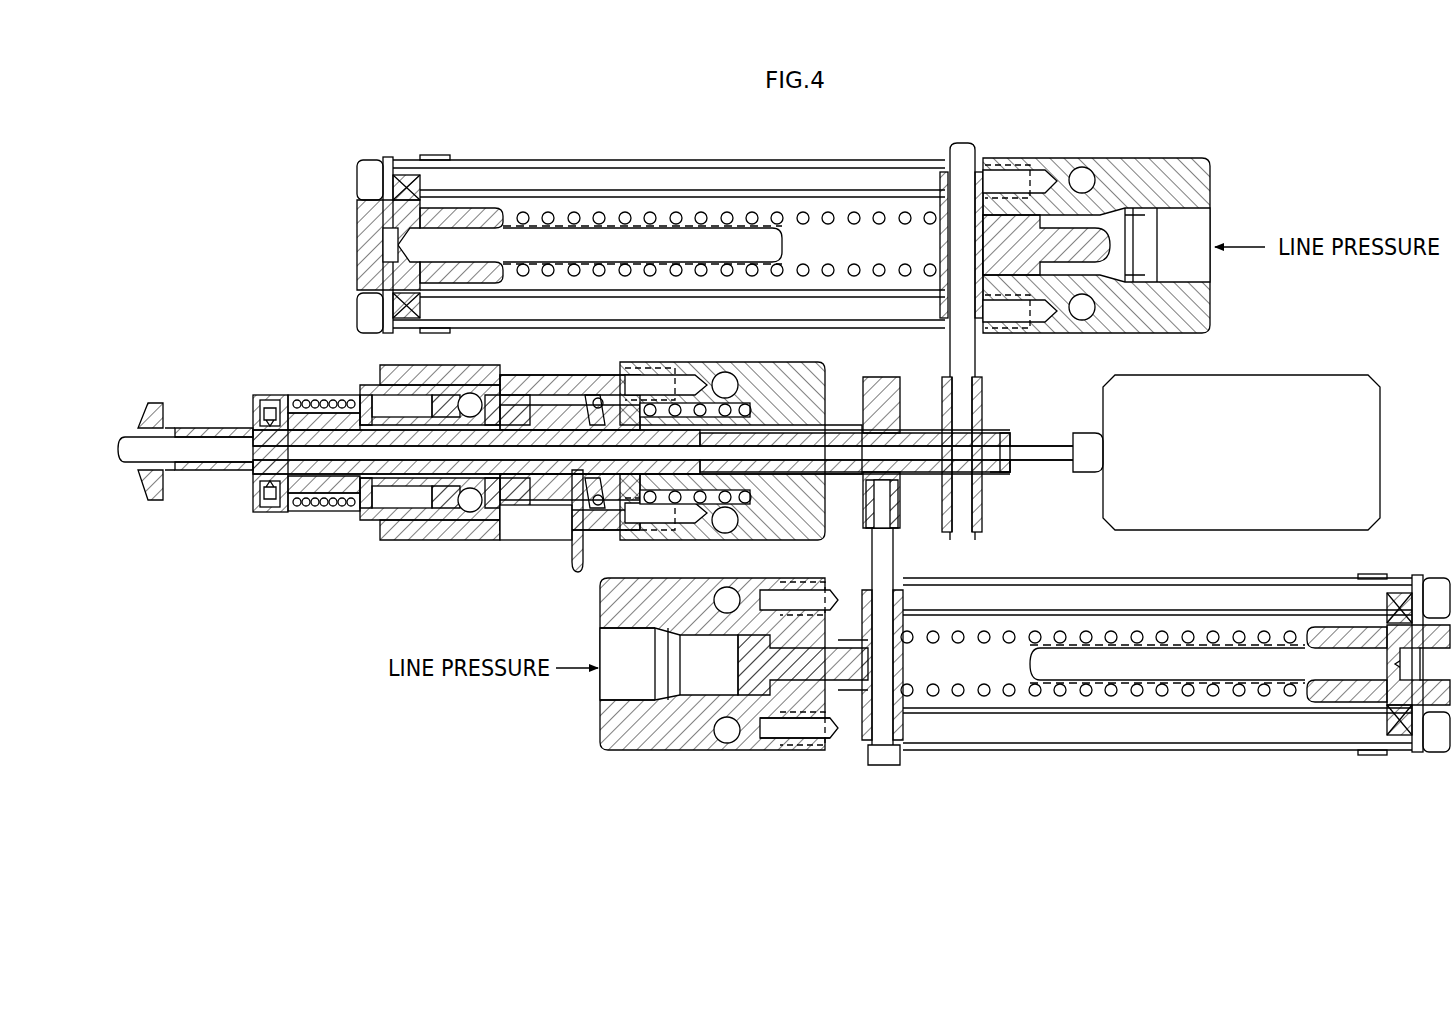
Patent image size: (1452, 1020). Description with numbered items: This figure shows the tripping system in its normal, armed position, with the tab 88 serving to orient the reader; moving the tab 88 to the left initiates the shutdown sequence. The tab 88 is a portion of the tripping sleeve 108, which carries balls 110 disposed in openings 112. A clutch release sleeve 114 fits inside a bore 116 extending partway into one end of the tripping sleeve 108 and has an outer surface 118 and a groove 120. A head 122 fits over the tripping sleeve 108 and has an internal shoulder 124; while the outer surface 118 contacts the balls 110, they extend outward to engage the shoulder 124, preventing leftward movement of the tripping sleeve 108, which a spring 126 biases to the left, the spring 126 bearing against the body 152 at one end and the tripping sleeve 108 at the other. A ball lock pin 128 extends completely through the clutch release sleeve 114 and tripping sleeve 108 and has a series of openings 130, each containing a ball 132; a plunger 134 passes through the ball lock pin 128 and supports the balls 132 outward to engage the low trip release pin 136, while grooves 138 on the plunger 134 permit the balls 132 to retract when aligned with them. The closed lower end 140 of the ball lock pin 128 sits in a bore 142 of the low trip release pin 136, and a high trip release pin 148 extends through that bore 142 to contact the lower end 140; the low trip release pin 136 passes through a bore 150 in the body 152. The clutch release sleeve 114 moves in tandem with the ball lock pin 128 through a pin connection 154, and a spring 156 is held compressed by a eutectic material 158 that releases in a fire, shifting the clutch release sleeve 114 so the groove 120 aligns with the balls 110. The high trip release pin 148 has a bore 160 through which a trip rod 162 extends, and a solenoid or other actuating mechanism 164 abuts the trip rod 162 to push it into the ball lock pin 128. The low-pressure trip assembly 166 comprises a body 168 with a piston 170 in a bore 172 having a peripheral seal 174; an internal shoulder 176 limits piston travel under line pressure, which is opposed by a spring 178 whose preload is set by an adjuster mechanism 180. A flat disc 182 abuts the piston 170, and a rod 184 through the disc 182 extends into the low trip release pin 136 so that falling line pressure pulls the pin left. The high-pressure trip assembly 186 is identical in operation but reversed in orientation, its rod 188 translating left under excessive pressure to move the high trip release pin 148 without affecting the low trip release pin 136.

The tab 88 is at (572, 575).
The tripping sleeve 108 is at (530, 372).
The balls 110 is at (450, 392).
The openings 112 is at (420, 540).
The clutch release sleeve 114 is at (400, 525).
The bore 116 is at (500, 540).
The outer surface 118 is at (400, 540).
The groove 120 is at (520, 375).
The head 122 is at (365, 395).
The internal shoulder 124 is at (470, 512).
The spring 126 is at (735, 385).
The ball lock pin 128 is at (190, 428).
The openings 130 is at (650, 375).
The balls 132 is at (605, 510).
The plunger 134 is at (138, 424).
The low trip release pin 136 is at (880, 377).
The grooves 138 is at (548, 540).
The closed lower end 140 is at (655, 532).
The bore 142 is at (805, 510).
The high trip release pin 148 is at (1000, 433).
The bore 150 is at (880, 520).
The body 152 is at (770, 540).
The pin connection 154 is at (270, 512).
The spring 156 is at (292, 400).
The eutectic material 158 is at (312, 512).
The bore 160 is at (1010, 472).
The trip rod 162 is at (1020, 446).
The actuating mechanism 164 is at (1256, 460).
The low-pressure trip assembly 166 is at (1143, 760).
The body 168 is at (790, 750).
The piston 170 is at (726, 670).
The bore 172 is at (600, 690).
The peripheral seal 174 is at (765, 738).
The internal shoulder 176 is at (880, 660).
The spring 178 is at (1050, 700).
The adjuster mechanism 180 is at (1398, 578).
The flat disc 182 is at (858, 765).
The rod 184 is at (895, 558).
The high-pressure trip assembly 186 is at (1000, 158).
The rod 188 is at (976, 345).